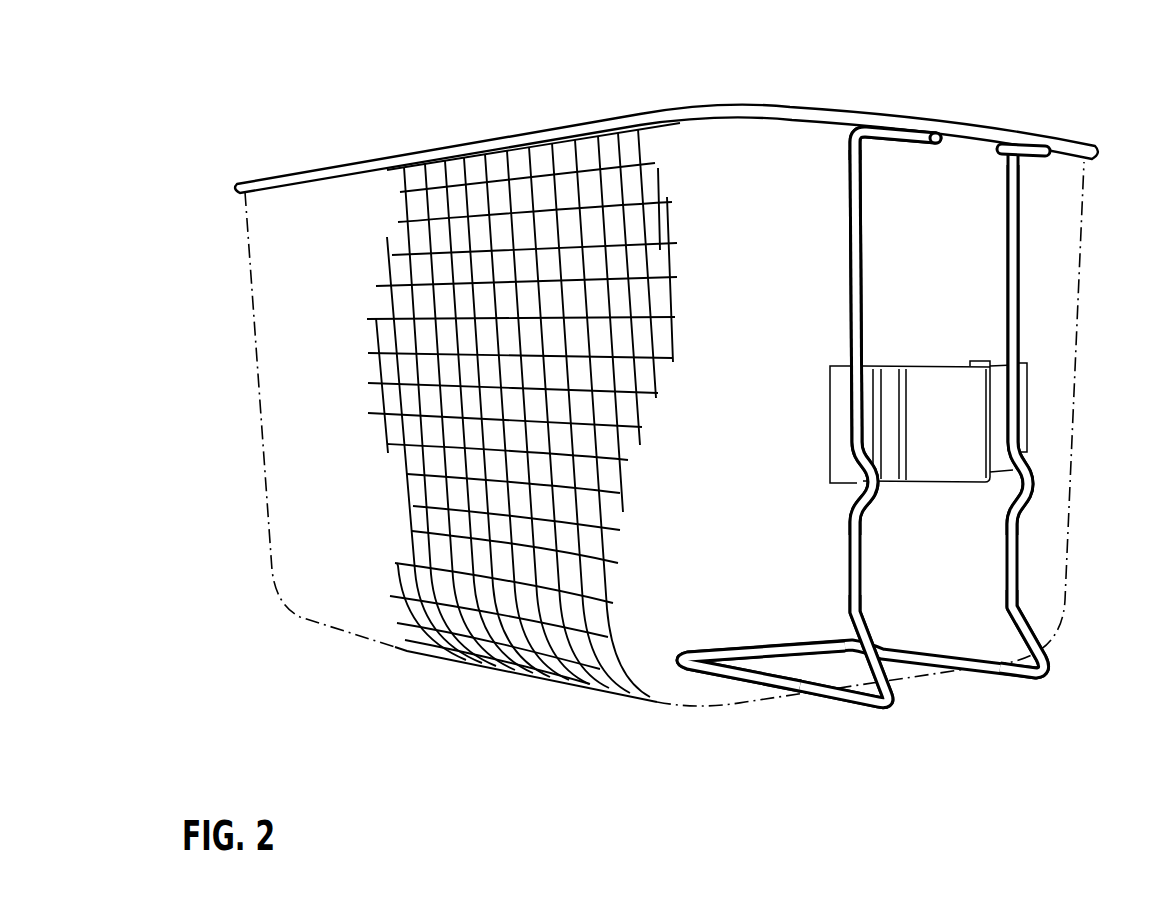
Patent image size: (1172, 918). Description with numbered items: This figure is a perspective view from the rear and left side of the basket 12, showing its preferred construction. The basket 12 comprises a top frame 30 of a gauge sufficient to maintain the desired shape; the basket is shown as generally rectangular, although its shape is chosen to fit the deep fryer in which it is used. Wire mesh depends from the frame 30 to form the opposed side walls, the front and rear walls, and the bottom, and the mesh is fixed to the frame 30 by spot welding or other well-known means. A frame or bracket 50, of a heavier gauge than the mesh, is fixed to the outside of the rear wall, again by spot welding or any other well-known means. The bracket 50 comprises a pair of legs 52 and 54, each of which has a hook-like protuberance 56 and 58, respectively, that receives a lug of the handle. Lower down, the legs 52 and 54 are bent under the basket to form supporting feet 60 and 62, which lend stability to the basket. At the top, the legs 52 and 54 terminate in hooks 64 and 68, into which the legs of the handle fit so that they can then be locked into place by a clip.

The basket 12 is at (405, 666).
The top frame 30 is at (466, 148).
The frame or bracket 50 is at (911, 408).
The leg 52 is at (850, 200).
The leg 54 is at (1019, 206).
The hook-like protuberance 56 is at (860, 497).
The hook-like protuberance 58 is at (1028, 458).
The supporting foot 60 is at (890, 710).
The supporting foot 62 is at (1046, 688).
The hook 64 is at (860, 130).
The hook 68 is at (1030, 145).